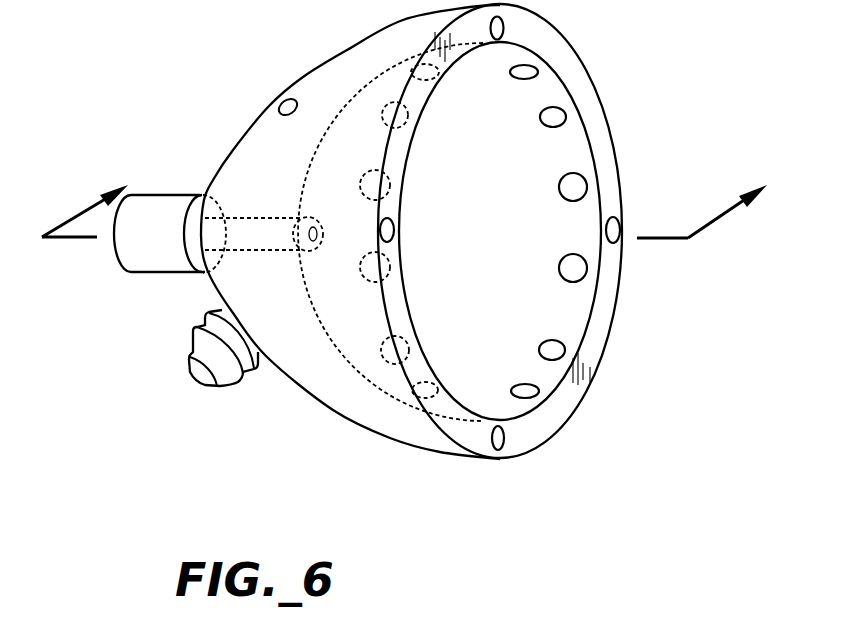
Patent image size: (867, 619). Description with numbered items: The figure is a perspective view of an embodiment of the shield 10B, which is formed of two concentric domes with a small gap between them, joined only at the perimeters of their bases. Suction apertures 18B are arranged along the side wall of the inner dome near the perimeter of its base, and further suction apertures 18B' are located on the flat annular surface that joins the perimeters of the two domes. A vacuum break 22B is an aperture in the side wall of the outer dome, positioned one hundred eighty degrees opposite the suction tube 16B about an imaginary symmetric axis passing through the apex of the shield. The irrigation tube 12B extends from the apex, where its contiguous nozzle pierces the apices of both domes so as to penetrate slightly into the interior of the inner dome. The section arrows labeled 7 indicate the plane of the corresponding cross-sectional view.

The shield 10B is at (348, 60).
The vacuum break 22B is at (284, 99).
The irrigation tube 12B is at (160, 262).
The suction tube 16B is at (200, 373).
The suction apertures 18B is at (531, 234).
The suction apertures 18B' is at (655, 204).
The section line 7- 7 is at (416, 197).